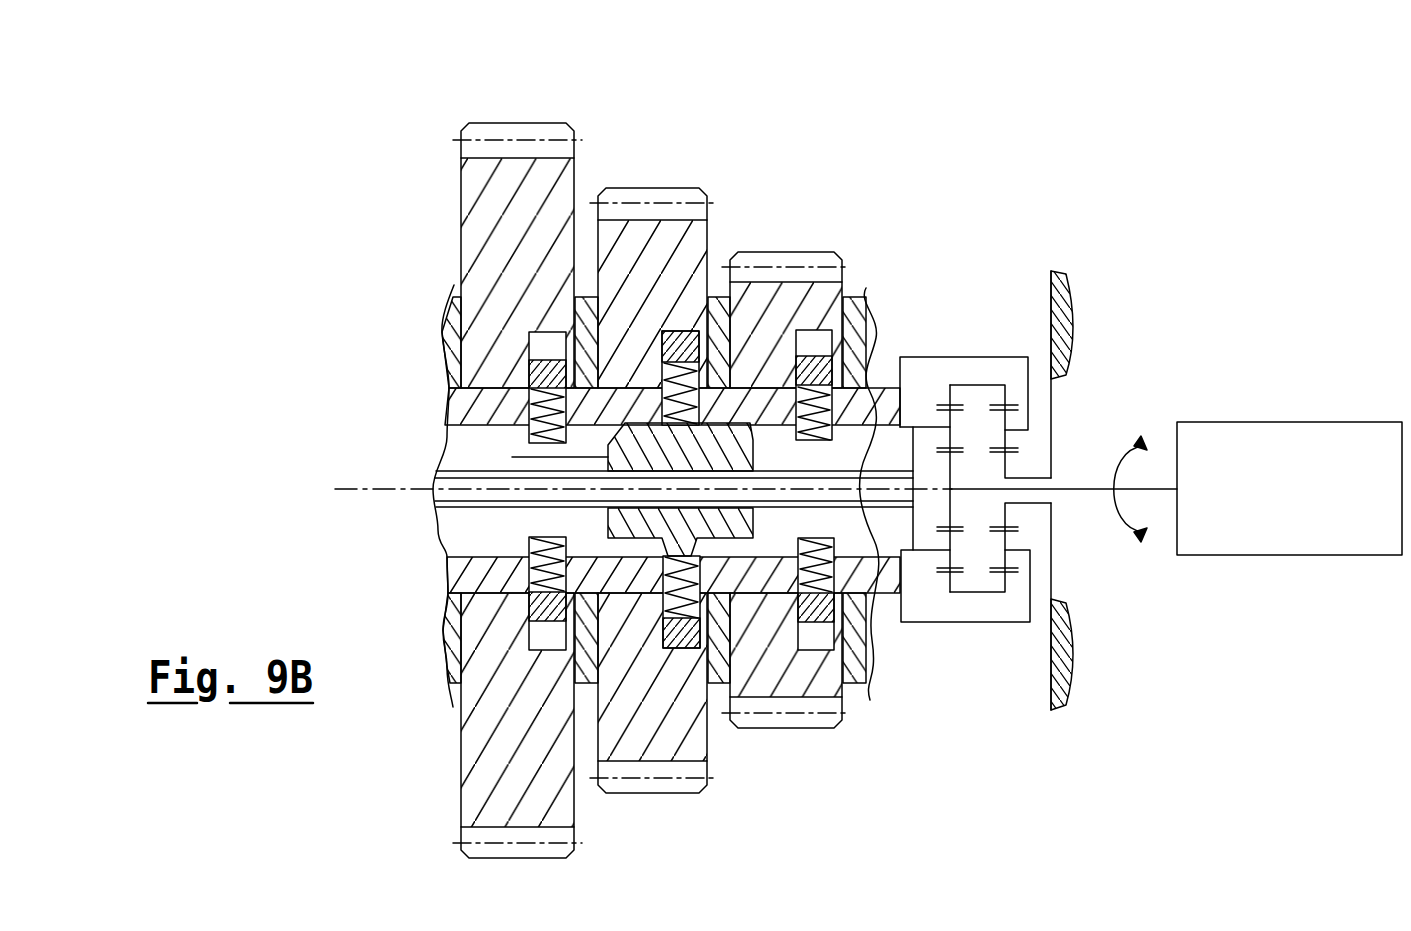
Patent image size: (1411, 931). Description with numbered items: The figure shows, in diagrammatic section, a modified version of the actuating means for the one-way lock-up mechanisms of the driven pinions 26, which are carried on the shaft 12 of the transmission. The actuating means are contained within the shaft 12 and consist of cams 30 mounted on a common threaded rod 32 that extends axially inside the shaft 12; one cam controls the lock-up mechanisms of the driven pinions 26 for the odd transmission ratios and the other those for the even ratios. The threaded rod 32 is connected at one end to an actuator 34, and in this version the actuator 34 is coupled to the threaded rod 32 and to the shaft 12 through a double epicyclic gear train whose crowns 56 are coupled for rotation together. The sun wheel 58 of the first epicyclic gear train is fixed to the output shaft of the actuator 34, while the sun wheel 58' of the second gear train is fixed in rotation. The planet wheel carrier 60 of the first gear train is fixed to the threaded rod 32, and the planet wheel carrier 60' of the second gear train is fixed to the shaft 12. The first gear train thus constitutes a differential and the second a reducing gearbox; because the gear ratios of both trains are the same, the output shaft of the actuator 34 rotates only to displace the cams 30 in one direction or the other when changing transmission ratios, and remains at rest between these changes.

The shaft 12 is at (876, 382).
The driven pinions 26 is at (561, 126).
The cams 30 is at (512, 457).
The threaded rod 32 is at (487, 508).
The actuator 34 is at (1278, 422).
The crowns 56 is at (963, 385).
The sun wheel of the first epicyclic gear train 58 is at (955, 598).
The sun wheel of the second gear train 58' is at (1029, 431).
The planet wheel carrier of the first gear train 60 is at (964, 424).
The planet wheel carrier of the second gear train 60' is at (965, 621).